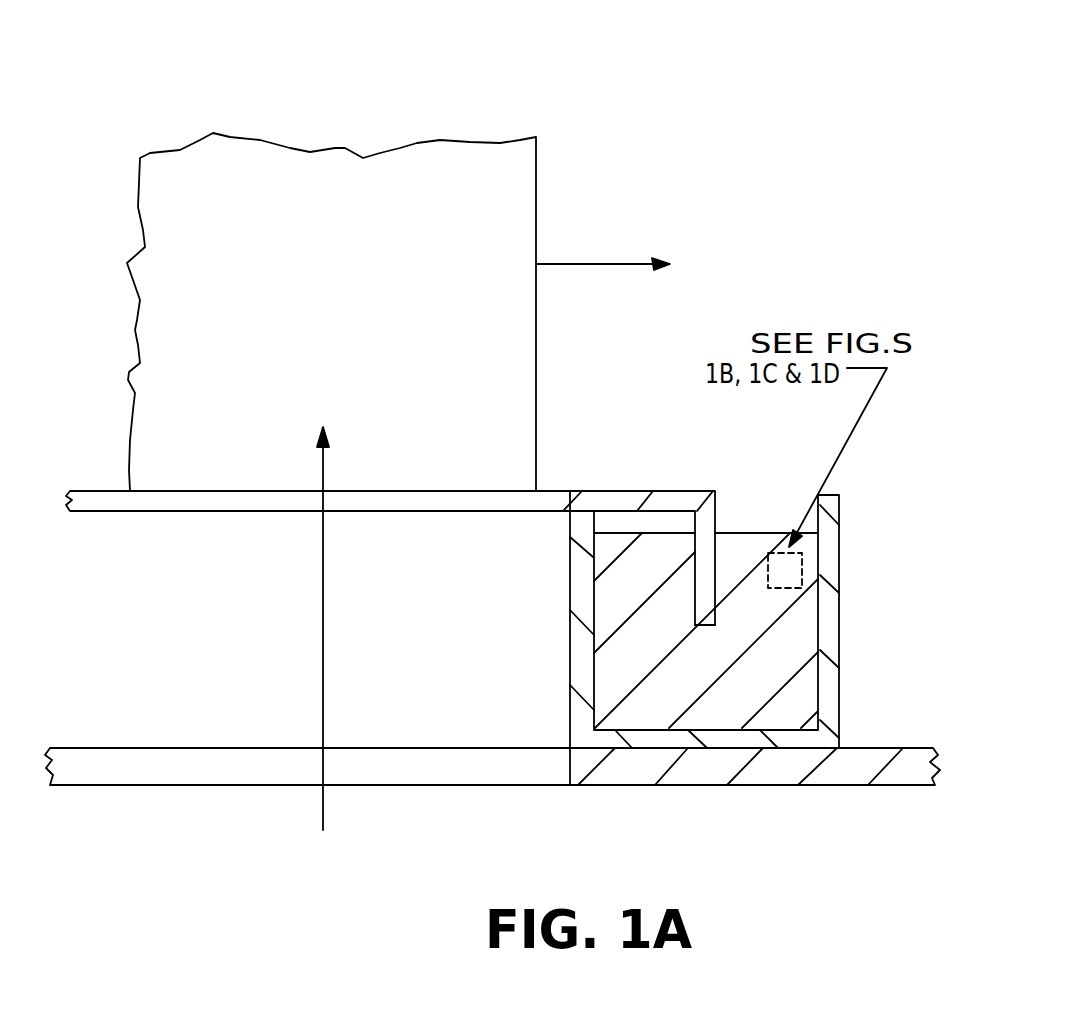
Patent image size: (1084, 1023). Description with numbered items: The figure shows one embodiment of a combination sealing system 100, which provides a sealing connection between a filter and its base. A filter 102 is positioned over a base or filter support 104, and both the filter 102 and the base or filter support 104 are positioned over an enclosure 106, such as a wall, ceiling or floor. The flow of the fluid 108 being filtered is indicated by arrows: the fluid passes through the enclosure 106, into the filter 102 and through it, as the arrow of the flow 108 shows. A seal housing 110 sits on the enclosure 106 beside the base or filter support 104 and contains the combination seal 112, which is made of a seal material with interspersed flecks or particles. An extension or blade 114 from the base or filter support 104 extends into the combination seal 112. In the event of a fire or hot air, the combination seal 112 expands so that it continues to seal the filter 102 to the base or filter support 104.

The combination sealing system 100 is at (660, 65).
The filter 102 is at (388, 265).
The base or filter support 104 is at (628, 492).
The enclosure 106 is at (710, 786).
The flow of the fluid 108 is at (584, 264).
The seal housing 110 is at (840, 675).
The combination seal 112 is at (802, 630).
The extension or blade 114 is at (719, 556).